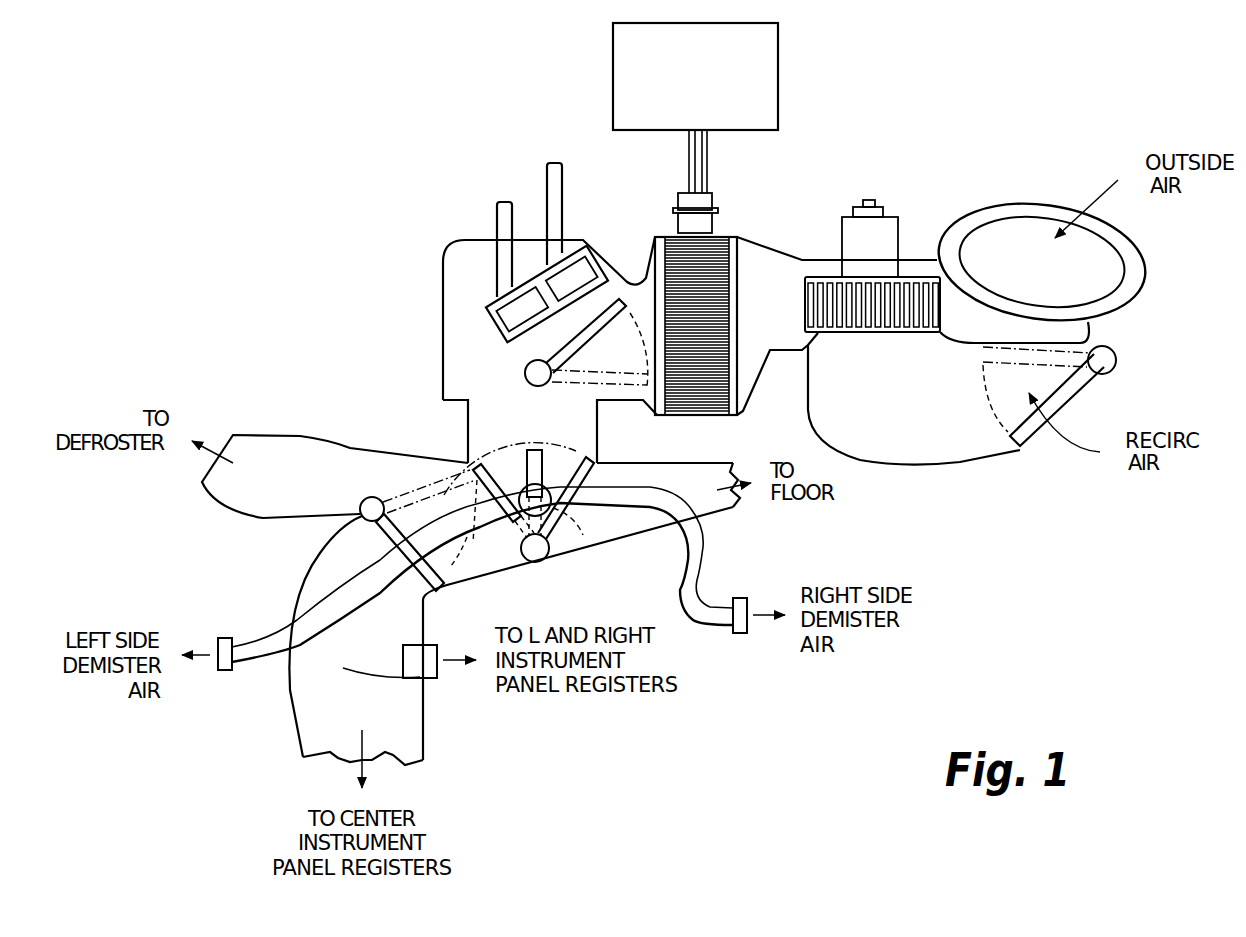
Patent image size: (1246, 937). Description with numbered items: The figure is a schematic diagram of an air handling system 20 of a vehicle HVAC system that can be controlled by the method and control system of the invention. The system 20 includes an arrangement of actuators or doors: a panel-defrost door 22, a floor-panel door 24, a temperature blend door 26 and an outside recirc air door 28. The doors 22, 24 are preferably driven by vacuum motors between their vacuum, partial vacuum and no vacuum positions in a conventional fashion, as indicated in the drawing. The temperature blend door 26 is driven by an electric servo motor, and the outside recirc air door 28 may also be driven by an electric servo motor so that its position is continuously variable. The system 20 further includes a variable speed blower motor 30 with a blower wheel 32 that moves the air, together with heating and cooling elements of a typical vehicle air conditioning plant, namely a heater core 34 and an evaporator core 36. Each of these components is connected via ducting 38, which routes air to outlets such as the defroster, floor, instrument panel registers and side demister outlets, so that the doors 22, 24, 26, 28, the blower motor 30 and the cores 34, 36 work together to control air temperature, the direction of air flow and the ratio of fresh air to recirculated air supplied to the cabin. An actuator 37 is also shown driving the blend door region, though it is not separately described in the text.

The air handling system 20 is at (995, 176).
The panel-defrost door 22 is at (380, 553).
The floor-panel door 24 is at (570, 518).
The temperature blend door 26 is at (560, 342).
The outside recirc air door 28 is at (1077, 403).
The variable speed blower motor 30 is at (842, 250).
The blower wheel 32 is at (923, 277).
The heater core 34 is at (493, 322).
The evaporator core 36 is at (740, 283).
The actuator 37 is at (612, 72).
The ducting 38 is at (898, 467).